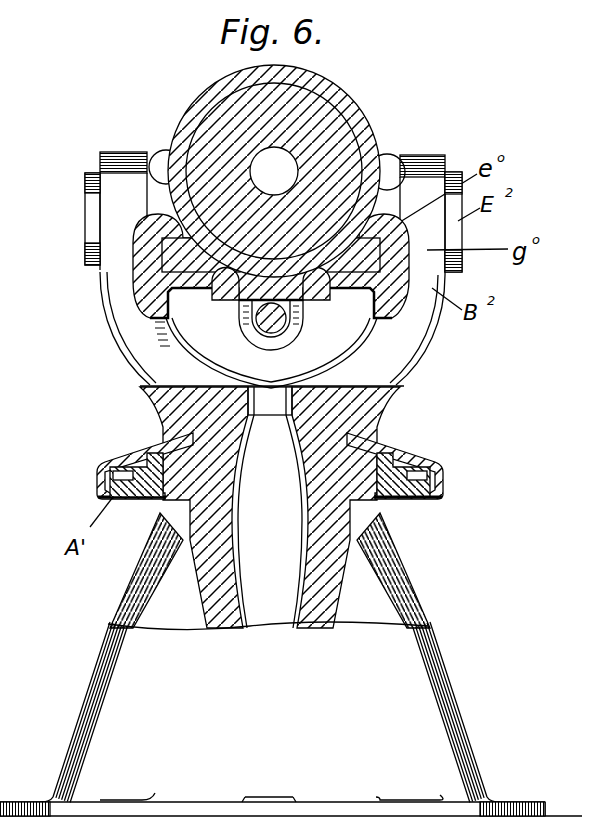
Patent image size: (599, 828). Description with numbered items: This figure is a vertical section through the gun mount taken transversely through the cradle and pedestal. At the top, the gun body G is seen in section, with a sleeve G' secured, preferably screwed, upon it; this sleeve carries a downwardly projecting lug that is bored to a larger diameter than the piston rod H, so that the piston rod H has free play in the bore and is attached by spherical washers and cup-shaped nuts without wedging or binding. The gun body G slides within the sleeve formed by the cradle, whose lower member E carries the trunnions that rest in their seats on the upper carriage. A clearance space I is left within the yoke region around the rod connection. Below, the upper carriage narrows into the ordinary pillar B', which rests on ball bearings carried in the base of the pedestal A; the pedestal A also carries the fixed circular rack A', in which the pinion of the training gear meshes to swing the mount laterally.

The sleeve G' is at (274, 171).
The gun body G is at (293, 171).
The piston rod H is at (290, 330).
The yoke cavity I is at (212, 320).
The lower member of the cradle E is at (400, 306).
The fixed circular rack A' is at (415, 461).
The pillar B' is at (270, 507).
The pedestal A is at (291, 664).